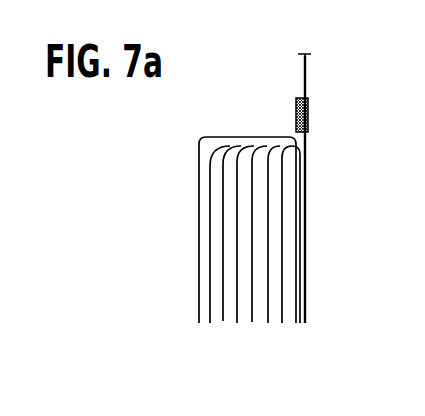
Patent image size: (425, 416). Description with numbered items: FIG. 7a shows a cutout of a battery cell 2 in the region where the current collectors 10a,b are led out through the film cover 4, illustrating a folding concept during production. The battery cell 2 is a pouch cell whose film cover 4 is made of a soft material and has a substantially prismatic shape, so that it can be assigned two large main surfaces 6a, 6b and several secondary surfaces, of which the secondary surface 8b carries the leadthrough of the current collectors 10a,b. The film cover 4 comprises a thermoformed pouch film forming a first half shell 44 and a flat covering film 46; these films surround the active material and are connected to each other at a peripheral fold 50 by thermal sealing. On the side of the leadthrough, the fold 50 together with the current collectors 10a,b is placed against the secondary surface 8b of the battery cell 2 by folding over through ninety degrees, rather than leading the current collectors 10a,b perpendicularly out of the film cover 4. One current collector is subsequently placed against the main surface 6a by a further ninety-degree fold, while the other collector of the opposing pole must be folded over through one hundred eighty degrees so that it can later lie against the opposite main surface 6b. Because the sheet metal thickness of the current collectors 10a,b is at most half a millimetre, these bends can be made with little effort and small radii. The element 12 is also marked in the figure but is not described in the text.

The battery cell 2 is at (188, 283).
The film cover 4 is at (227, 136).
The main surface 6a is at (188, 236).
The main surface 6b is at (317, 222).
The secondary surface 8b is at (262, 137).
The current collectors 10a,b is at (307, 70).
The edge 12 is at (365, 273).
The first half shell 44 is at (199, 148).
The flat covering film 46 is at (307, 298).
The peripheral fold 50 is at (309, 108).